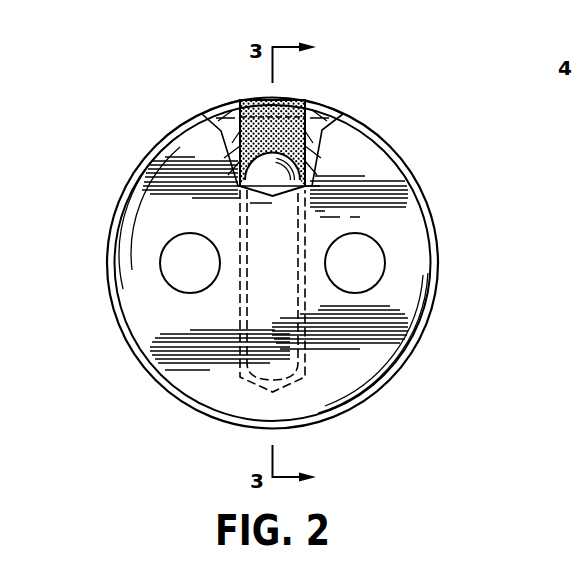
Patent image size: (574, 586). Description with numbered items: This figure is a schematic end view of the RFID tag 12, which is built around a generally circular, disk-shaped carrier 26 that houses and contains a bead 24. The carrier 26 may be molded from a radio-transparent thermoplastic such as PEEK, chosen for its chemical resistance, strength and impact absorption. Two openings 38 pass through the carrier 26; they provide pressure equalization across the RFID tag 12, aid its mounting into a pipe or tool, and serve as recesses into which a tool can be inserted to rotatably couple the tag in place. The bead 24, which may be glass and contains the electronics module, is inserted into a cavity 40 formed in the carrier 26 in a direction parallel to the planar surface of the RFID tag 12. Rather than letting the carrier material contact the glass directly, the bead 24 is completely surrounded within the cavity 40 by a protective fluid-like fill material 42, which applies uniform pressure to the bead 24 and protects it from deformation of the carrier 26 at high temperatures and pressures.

The RFID tag 12 is at (416, 173).
The bead 24 is at (260, 170).
The carrier 26 is at (350, 398).
The openings 38 is at (162, 262).
The cavity 40 is at (291, 94).
The protective fluid-like fill material 42 is at (250, 102).